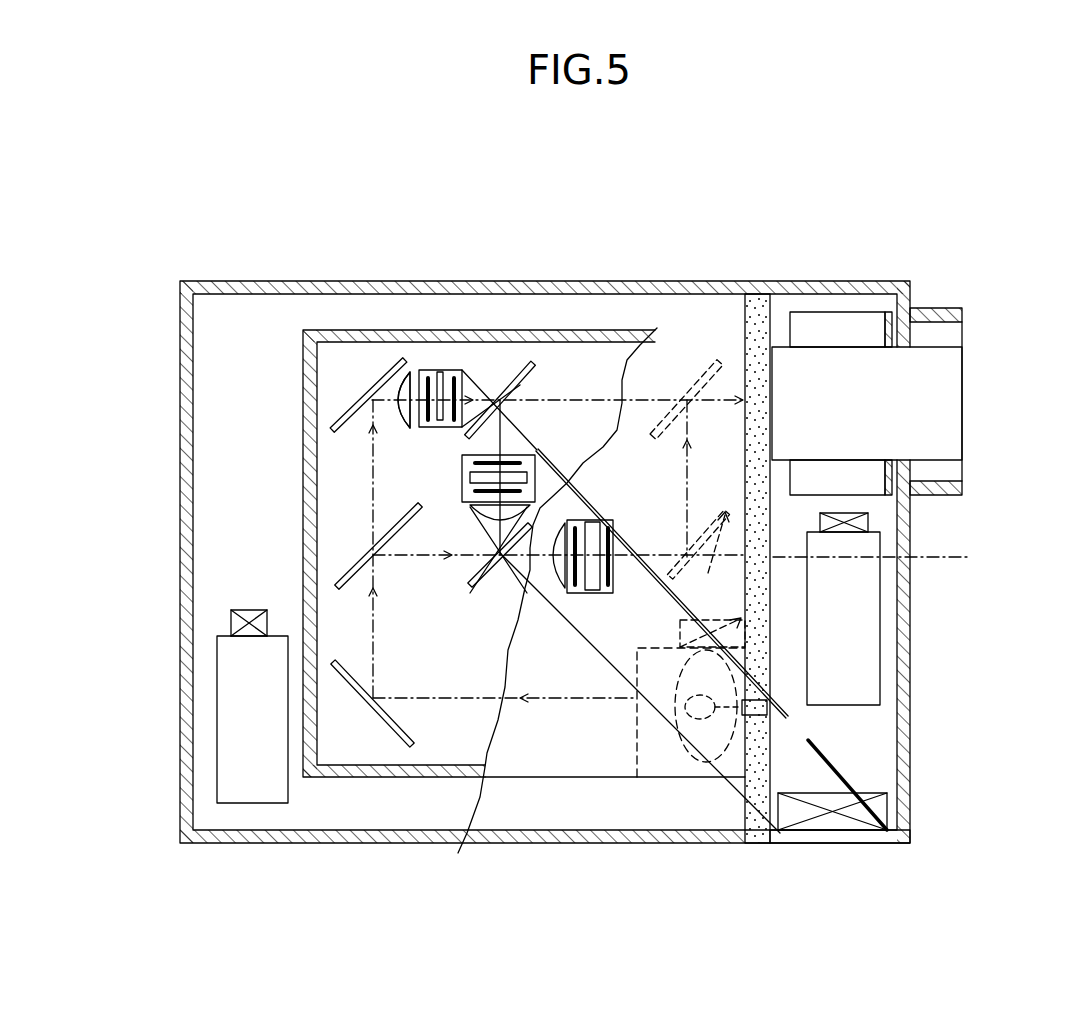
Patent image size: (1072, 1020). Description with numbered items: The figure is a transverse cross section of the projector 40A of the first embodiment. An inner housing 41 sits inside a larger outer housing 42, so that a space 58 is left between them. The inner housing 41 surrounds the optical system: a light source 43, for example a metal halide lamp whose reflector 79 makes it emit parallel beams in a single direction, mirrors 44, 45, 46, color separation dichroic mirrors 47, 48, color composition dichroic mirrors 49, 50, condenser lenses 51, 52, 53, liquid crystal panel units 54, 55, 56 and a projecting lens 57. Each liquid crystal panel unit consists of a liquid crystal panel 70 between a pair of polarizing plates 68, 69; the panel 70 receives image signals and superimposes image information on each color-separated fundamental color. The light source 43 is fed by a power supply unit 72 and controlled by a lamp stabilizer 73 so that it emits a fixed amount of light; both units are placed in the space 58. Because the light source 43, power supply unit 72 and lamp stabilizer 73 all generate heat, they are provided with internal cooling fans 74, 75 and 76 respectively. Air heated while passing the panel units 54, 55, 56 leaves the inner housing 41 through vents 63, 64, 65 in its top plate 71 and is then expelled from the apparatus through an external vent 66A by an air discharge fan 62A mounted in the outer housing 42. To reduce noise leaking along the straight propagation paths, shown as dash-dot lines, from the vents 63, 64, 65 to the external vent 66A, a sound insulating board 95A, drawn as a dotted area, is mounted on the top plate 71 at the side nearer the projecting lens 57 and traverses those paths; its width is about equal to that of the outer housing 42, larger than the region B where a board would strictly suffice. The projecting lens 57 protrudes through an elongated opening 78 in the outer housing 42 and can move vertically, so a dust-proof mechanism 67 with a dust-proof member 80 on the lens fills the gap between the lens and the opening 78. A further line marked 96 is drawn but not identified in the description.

The projector 40A is at (768, 157).
The inner housing 41 is at (557, 780).
The outer housing 42 is at (690, 848).
The light source 43 is at (690, 720).
The mirror 44 is at (357, 693).
The mirror 45 is at (382, 384).
The mirror 46 is at (698, 557).
The color separation dichroic mirror 47 is at (352, 560).
The color separation dichroic mirror 48 is at (482, 590).
The color composition dichroic mirror 49 is at (540, 368).
The color composition dichroic mirror 50 is at (700, 372).
The condenser lens 51 is at (400, 414).
The condenser lens 52 is at (485, 513).
The condenser lens 53 is at (528, 596).
The liquid crystal panel unit 54 is at (533, 155).
The liquid crystal panel unit 55 is at (518, 460).
The liquid crystal panel unit 56 is at (602, 594).
The projecting lens 57 is at (932, 400).
The space 58 is at (232, 327).
The air discharge fan 62A is at (880, 808).
The vent 63 is at (410, 372).
The vent 64 is at (562, 486).
The vent 65 is at (590, 530).
The external vent 66A is at (870, 837).
The dust-proof mechanism 67 is at (874, 304).
The polarizing plate 68 is at (427, 372).
The polarizing plate 69 is at (455, 372).
The liquid crystal panel 70 is at (440, 372).
The top plate 71 is at (548, 609).
The power supply unit 72 is at (250, 778).
The lamp stabilizer 73 is at (868, 638).
The internal cooling fan 74 is at (787, 620).
The internal cooling fan 75 is at (230, 621).
The internal cooling fan 76 is at (868, 522).
The elongated opening 78 is at (905, 355).
The reflector 79 is at (678, 716).
The dust-proof member 80 is at (835, 327).
The sound insulating board 95A is at (762, 757).
The axis 96 is at (889, 555).
The region B is at (842, 785).